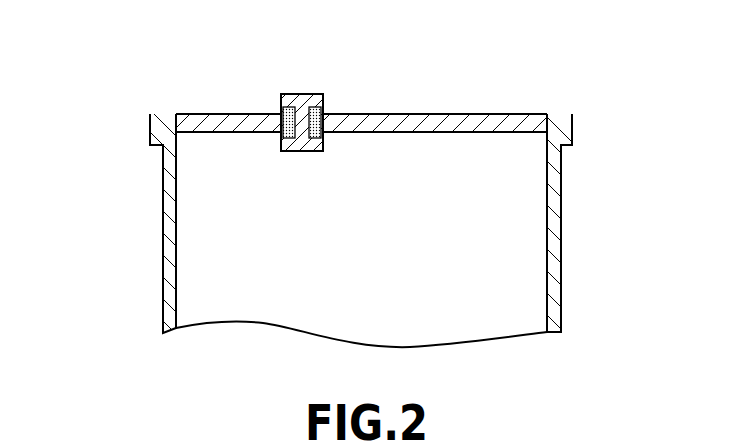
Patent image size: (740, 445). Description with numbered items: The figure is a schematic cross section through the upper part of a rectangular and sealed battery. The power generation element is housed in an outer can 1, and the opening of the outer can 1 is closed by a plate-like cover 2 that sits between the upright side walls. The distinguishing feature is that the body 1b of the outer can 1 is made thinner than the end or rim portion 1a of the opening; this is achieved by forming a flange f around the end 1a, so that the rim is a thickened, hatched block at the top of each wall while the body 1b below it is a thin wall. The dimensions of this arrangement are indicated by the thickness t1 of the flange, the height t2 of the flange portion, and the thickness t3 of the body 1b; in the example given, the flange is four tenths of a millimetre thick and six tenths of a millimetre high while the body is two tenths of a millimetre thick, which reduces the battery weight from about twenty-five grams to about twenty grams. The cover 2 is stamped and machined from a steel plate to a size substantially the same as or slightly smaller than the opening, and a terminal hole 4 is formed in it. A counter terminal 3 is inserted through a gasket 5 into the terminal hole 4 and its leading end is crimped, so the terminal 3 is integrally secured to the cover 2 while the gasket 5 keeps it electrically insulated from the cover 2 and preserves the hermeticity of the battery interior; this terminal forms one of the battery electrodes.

The outer can 1 is at (409, 224).
The end or rim portion of the opening 1a is at (566, 120).
The body 1b is at (561, 237).
The cover 2 is at (418, 102).
The counter terminal 3 is at (289, 123).
The terminal hole 4 is at (312, 140).
The gasket 5 is at (279, 135).
The flange f is at (573, 133).
The flange thickness t1 is at (218, 68).
The flange height t2 is at (150, 145).
The body thickness t3 is at (130, 233).